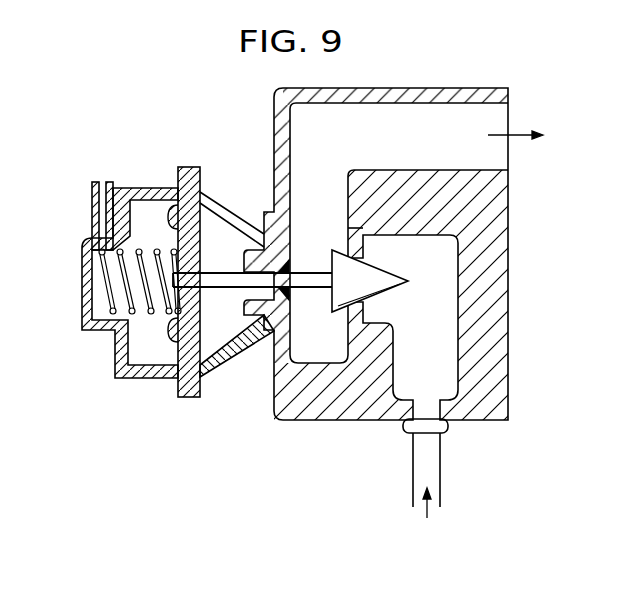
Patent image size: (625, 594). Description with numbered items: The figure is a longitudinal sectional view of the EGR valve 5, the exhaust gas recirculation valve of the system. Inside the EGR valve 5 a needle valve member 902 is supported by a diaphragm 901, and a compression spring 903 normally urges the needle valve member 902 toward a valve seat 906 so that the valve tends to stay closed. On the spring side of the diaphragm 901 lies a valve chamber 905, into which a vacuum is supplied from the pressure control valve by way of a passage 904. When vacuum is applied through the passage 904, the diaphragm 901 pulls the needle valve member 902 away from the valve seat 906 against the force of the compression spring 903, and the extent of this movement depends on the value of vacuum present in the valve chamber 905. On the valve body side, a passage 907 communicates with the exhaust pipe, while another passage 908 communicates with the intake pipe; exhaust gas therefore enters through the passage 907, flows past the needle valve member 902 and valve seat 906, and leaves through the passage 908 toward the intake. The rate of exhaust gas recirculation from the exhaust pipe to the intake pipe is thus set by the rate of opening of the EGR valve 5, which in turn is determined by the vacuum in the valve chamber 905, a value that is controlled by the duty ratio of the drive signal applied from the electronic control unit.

The EGR valve 5 is at (423, 80).
The diaphragm 901 is at (202, 371).
The needle valve member 902 is at (385, 289).
The compression spring 903 is at (157, 248).
The passage 904 is at (95, 195).
The valve chamber 905 is at (145, 342).
The valve seat 906 is at (350, 252).
The passage 907 is at (433, 455).
The passage 908 is at (485, 118).